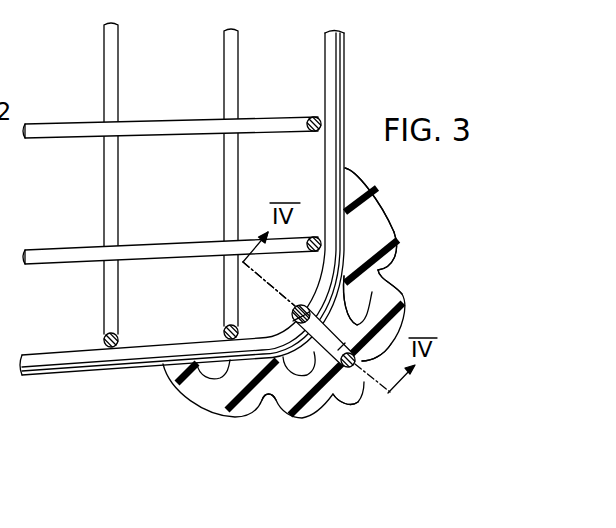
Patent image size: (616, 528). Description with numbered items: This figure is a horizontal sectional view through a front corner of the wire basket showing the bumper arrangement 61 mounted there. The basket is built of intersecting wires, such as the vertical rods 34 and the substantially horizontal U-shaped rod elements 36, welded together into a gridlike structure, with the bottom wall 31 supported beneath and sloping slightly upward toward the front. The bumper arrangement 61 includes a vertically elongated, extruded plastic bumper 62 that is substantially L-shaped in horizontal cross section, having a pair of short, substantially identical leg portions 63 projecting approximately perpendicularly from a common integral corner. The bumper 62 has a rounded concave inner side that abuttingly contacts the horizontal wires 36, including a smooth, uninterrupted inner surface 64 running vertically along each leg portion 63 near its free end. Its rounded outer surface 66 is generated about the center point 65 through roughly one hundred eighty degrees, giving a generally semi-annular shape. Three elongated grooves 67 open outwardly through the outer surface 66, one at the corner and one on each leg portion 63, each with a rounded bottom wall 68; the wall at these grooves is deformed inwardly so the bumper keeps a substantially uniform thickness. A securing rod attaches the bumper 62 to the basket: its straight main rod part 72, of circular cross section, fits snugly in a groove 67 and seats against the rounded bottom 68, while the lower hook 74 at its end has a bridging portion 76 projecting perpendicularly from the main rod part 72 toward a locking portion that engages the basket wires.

The bottom wall 31 is at (113, 130).
The vertical rods 34 is at (322, 122).
The horizontal rod elements 36 is at (335, 58).
The bumper arrangement 61 is at (376, 395).
The bumper 62 is at (410, 293).
The leg portions 63 is at (382, 230).
The inner surface 64 is at (330, 195).
The center point 65 is at (262, 283).
The outer surface 66 is at (378, 200).
The grooves 67 is at (268, 406).
The rounded bottom wall 68 is at (385, 268).
The main rod part 72 is at (390, 389).
The lower hook 74 is at (287, 312).
The bridging portion 76 is at (307, 309).